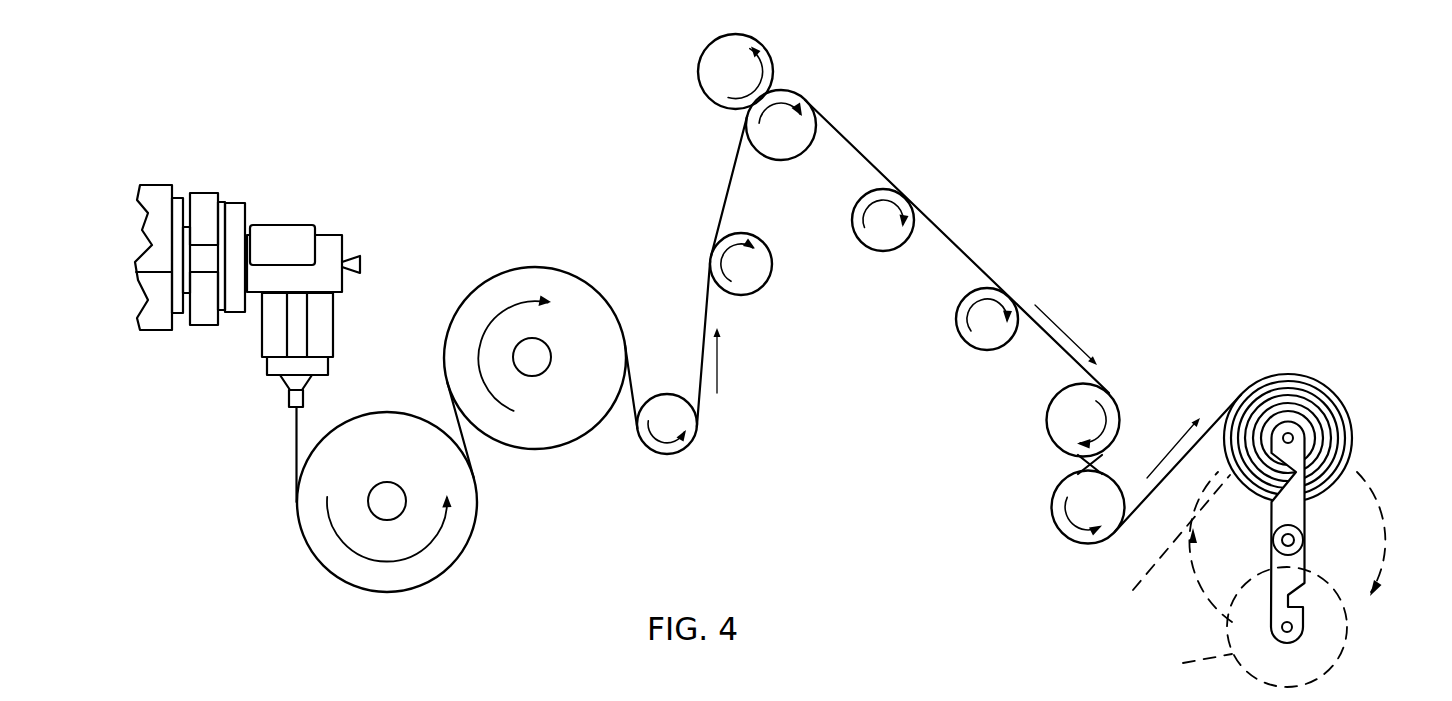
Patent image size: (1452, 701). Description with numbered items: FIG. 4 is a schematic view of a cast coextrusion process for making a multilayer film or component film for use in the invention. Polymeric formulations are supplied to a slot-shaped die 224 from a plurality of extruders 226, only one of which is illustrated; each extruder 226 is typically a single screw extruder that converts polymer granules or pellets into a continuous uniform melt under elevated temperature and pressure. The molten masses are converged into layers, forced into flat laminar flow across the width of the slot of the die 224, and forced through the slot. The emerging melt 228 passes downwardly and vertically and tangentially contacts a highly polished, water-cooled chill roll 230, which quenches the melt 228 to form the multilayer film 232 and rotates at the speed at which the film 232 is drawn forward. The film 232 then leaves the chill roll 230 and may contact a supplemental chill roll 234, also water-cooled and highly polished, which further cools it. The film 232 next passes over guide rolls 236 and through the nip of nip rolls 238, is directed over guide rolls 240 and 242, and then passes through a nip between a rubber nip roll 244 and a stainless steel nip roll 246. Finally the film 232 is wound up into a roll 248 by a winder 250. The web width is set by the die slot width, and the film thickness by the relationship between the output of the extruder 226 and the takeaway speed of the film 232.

The slot-shaped die 224 is at (292, 393).
The extruder 226 is at (156, 197).
The melt 228 is at (296, 437).
The chill roll 230 is at (315, 523).
The multilayer film 232 is at (467, 440).
The supplemental chill roll 234 is at (612, 307).
The guide roll 236 is at (658, 428).
The nip roll 238 is at (730, 50).
The guide roll 240 is at (866, 231).
The guide roll 242 is at (967, 332).
The rubber nip roll 244 is at (1063, 427).
The stainless steel nip roll 246 is at (1063, 513).
The roll 248 is at (1348, 410).
The winder 250 is at (1282, 506).